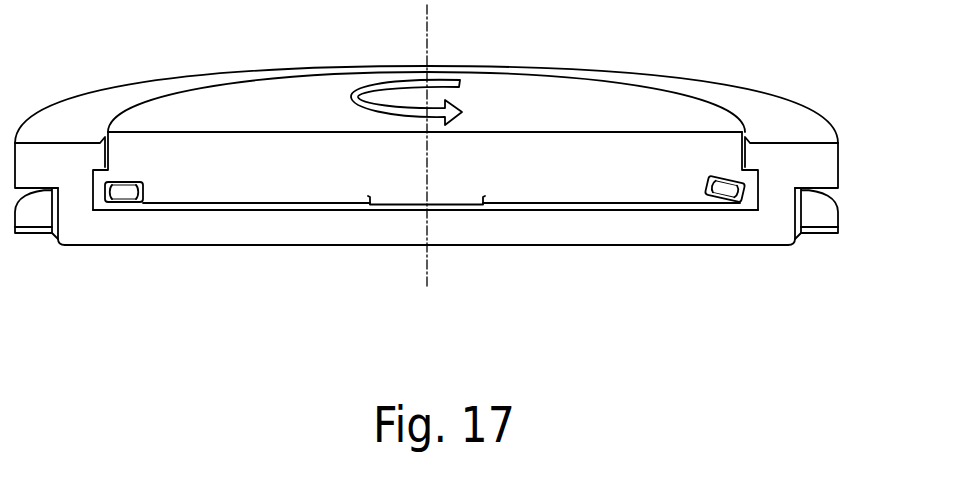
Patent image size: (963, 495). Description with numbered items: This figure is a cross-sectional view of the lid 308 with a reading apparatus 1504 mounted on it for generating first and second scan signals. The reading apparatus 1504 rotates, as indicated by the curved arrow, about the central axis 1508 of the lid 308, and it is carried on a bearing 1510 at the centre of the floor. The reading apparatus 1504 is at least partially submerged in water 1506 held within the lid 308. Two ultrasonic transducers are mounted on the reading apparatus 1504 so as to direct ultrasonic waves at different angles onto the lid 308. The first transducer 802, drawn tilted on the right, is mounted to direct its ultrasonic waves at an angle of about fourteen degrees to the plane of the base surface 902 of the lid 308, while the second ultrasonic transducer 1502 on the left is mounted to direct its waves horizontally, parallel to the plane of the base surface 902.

The lid 308 is at (817, 168).
The reading apparatus 1504 is at (693, 110).
The base surface 902 is at (635, 227).
The water 1506 is at (258, 203).
The bearing 1510 is at (402, 203).
The axis 1508 is at (427, 272).
The second ultrasonic transducer 1502 is at (128, 193).
The right pin 802 is at (720, 205).